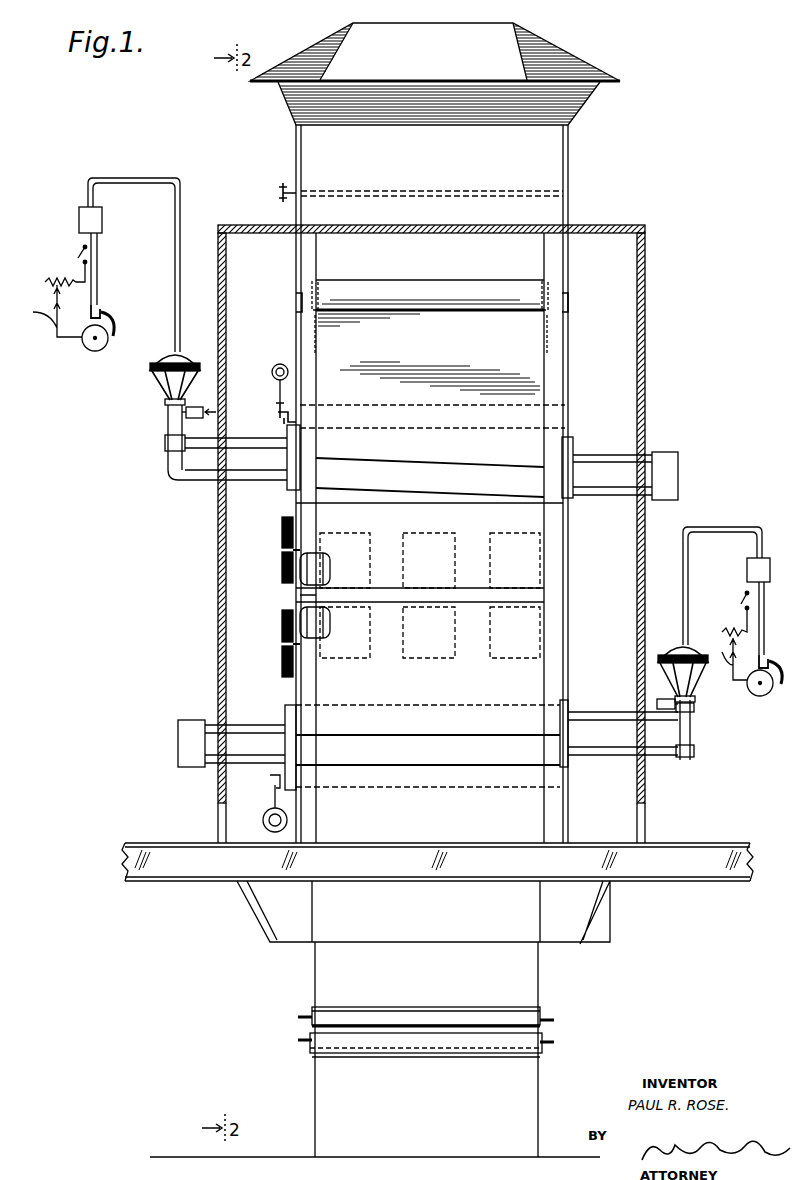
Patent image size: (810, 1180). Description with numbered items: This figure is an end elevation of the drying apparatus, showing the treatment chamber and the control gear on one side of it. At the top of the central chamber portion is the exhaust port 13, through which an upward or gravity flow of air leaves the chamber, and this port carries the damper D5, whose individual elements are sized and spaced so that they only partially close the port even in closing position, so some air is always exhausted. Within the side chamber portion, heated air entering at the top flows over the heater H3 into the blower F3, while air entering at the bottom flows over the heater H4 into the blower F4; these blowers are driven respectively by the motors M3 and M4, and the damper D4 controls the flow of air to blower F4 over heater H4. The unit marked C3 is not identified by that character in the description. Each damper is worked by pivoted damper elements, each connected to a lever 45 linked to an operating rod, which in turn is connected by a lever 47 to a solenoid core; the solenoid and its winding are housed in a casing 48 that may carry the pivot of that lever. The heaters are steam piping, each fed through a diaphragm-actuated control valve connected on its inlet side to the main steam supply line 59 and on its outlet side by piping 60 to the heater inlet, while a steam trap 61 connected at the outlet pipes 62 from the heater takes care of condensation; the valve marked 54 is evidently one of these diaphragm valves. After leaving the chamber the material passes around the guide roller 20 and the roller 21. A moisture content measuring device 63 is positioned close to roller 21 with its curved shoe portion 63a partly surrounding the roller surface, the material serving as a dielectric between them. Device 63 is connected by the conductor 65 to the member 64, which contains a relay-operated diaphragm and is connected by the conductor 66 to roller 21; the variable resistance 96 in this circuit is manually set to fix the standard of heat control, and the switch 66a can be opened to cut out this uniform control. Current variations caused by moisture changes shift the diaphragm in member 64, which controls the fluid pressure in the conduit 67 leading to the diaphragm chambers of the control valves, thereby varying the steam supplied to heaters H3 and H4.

The exhaust port 13 is at (570, 171).
The damper D5 is at (421, 188).
The heater H3 is at (430, 464).
The heater H4 is at (426, 745).
The compartment C3 is at (430, 549).
The damper D4 is at (430, 646).
The motor M3 is at (322, 558).
The motor M4 is at (316, 640).
The air impeller means F3 is at (280, 542).
The air impeller means F4 is at (280, 645).
The guide roller 20 is at (418, 1010).
The roller 21 is at (93, 352).
The lever 45 is at (281, 414).
The lever 47 is at (278, 400).
The casing 48 is at (277, 366).
The funnel 54 is at (188, 358).
The main steam supply line 59 is at (198, 406).
The piping 60 is at (246, 455).
The steam trap 61 is at (176, 741).
The outlet pipes 62 is at (270, 730).
The moisture content measuring device 63 is at (101, 308).
The shoe portion 63a is at (114, 322).
The member 64 is at (102, 215).
The conductor 65 is at (98, 257).
The conductor 66 is at (379, 482).
The switch 66a is at (79, 252).
The fluid conduit 67 is at (134, 177).
The variable resistance 96 is at (45, 280).